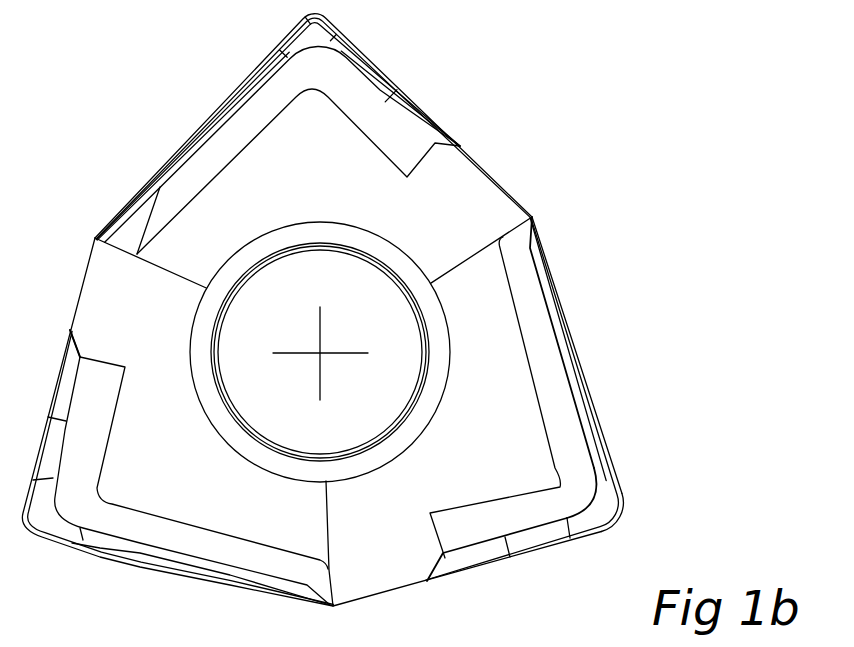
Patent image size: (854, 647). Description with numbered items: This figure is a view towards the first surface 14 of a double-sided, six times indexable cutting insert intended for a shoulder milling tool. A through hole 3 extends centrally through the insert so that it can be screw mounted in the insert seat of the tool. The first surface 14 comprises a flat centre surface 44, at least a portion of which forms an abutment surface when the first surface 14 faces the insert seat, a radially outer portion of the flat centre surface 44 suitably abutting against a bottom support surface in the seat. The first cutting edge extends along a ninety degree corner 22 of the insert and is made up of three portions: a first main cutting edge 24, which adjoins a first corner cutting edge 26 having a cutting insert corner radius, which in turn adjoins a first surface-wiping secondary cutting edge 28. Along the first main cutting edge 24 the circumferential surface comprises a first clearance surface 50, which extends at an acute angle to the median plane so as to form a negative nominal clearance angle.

The first surface 14 is at (447, 197).
The through hole 3 is at (380, 333).
The flat centre surface 44 is at (343, 193).
The first main cutting edge 24 is at (551, 212).
The first clearance surface 50 is at (606, 448).
The corner 22 is at (602, 510).
The first corner cutting edge 26 is at (640, 493).
The first surface-wiping secondary cutting edge 28 is at (590, 547).